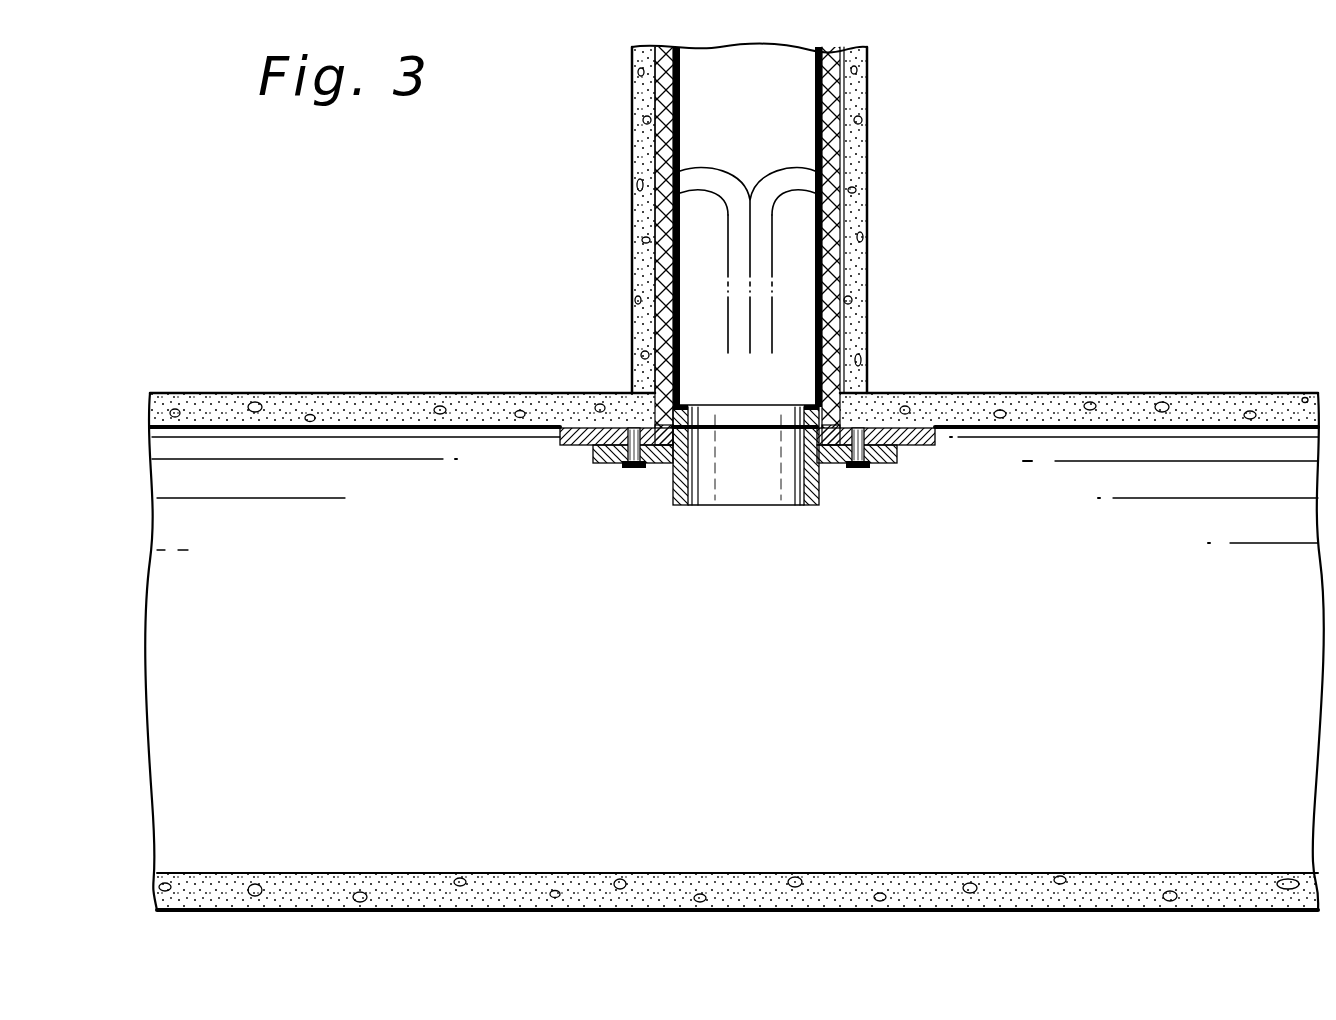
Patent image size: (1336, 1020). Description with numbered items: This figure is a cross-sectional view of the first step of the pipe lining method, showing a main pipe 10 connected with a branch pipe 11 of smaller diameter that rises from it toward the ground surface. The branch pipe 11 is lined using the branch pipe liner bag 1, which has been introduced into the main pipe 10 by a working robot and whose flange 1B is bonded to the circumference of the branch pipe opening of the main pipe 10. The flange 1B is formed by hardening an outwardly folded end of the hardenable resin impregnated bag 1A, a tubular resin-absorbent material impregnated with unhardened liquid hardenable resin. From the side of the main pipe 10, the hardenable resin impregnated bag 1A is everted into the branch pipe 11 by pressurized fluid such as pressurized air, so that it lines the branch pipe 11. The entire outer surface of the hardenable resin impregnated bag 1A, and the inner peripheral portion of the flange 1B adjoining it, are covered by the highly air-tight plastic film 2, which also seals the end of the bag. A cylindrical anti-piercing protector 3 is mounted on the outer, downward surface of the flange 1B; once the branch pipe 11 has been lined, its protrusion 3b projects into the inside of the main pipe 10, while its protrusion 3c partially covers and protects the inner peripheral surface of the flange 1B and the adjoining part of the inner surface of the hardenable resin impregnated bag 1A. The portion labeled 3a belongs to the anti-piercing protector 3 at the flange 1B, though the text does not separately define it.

The branch pipe liner bag 1 is at (680, 145).
The hardenable resin impregnated bag 1A is at (815, 338).
The flange 1B is at (920, 455).
The plastic film 2 is at (699, 294).
The anti-piercing protector 3 is at (728, 482).
The flange of sleeve 3a is at (598, 463).
The protrusion 3b is at (816, 506).
The protrusion 3c is at (692, 441).
The main pipe 10 is at (1127, 395).
The branch pipe 11 is at (866, 253).